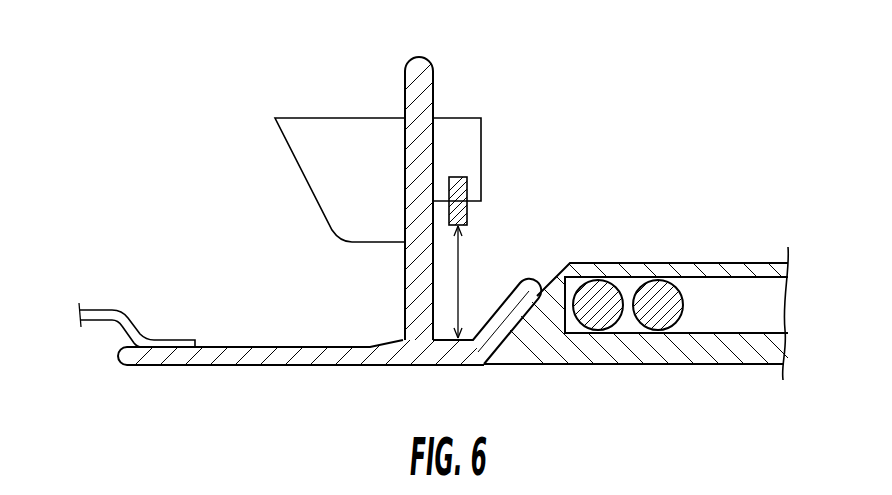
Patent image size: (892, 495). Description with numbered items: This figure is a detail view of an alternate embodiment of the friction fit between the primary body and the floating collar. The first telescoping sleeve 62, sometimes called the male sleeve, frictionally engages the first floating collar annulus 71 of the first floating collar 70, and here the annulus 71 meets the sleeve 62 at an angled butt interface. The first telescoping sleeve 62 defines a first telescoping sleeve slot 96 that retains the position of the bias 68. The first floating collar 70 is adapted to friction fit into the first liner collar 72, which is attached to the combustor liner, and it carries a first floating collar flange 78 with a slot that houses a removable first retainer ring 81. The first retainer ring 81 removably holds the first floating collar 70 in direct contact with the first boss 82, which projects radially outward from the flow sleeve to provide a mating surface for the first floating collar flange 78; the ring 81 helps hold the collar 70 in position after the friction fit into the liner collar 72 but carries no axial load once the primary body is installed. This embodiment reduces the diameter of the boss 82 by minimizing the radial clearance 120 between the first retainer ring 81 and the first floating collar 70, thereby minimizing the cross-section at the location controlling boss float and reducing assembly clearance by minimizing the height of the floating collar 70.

The first telescoping sleeve 62 is at (675, 362).
The bias 68 is at (670, 293).
The first floating collar 70 is at (305, 366).
The first floating collar annulus 71 is at (522, 308).
The first liner collar 72 is at (112, 310).
The first floating collar flange 78 is at (422, 83).
The first retainer ring 81 is at (460, 182).
The first boss 82 is at (337, 165).
The first telescoping sleeve slot 96 is at (626, 290).
The radial clearance 120 is at (460, 238).